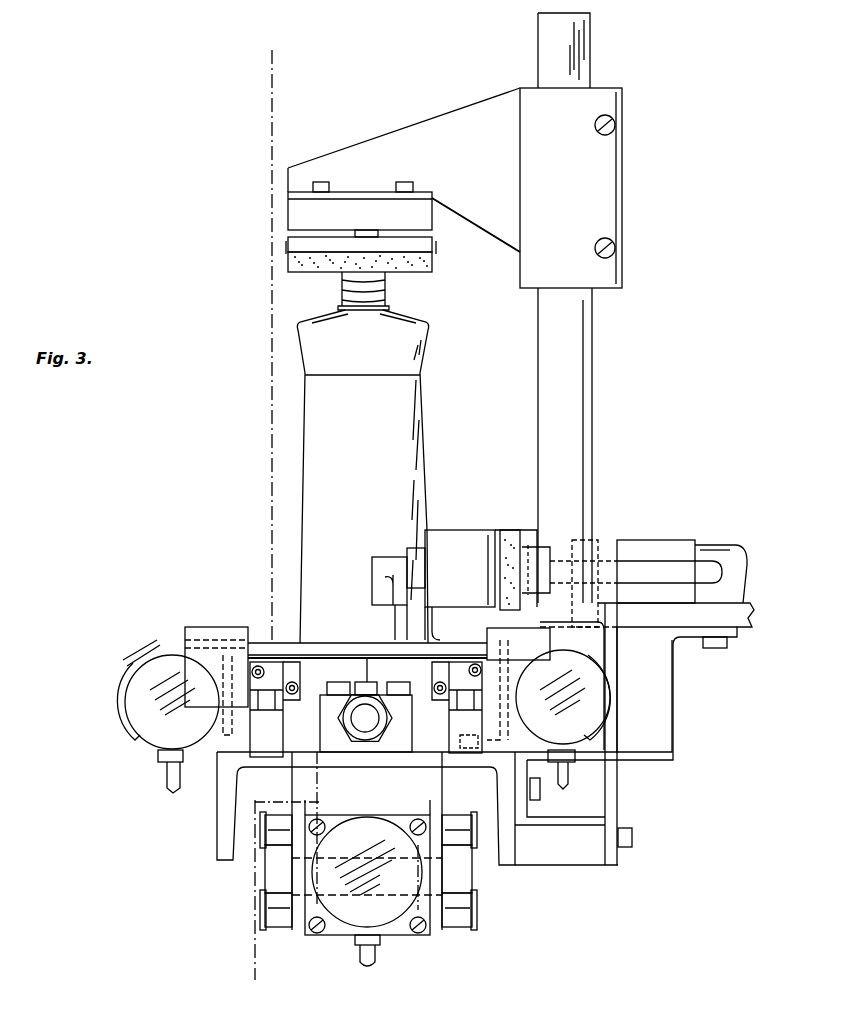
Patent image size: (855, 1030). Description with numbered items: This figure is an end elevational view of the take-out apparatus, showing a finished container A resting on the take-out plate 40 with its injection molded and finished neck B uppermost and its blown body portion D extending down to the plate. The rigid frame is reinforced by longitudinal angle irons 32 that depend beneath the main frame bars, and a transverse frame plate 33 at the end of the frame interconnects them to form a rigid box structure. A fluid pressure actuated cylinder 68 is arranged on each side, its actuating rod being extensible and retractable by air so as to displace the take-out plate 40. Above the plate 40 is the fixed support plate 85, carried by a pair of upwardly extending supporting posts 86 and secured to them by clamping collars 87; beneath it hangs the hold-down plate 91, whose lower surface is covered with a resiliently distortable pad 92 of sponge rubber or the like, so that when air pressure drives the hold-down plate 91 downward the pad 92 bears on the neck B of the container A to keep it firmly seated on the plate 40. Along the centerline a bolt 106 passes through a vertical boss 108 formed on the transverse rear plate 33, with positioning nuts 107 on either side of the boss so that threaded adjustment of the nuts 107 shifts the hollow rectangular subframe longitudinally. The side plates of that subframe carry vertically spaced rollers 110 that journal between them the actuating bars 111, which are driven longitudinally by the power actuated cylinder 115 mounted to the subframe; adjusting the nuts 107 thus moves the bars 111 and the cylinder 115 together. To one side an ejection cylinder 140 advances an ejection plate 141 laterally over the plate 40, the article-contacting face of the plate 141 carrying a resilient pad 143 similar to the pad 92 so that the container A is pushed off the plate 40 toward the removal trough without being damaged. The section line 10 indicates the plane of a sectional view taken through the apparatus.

The section line 10 is at (238, 80).
The longitudinal angle irons 32 is at (217, 862).
The transverse frame plate 33 is at (352, 766).
The take-out plate 40 is at (329, 645).
The fluid pressure actuated cylinder 68 is at (180, 729).
The fixed support plate 85 is at (424, 212).
The supporting posts 86 is at (587, 380).
The clamping collars 87 is at (620, 192).
The hold-down plate 91 is at (424, 241).
The resiliently distortable pad 92 is at (432, 264).
The bolt 106 is at (380, 736).
The positioning nuts 107 is at (355, 730).
The vertical boss 108 is at (404, 700).
The rollers 110 is at (272, 815).
The actuating bars 111 is at (266, 870).
The power actuated cylinder 115 is at (388, 918).
The ejection cylinder 140 is at (669, 538).
The ejection plate 141 is at (527, 530).
The resilient pad 143 is at (508, 530).
The container A is at (424, 394).
The neck B is at (388, 296).
The blown body portion D is at (420, 450).